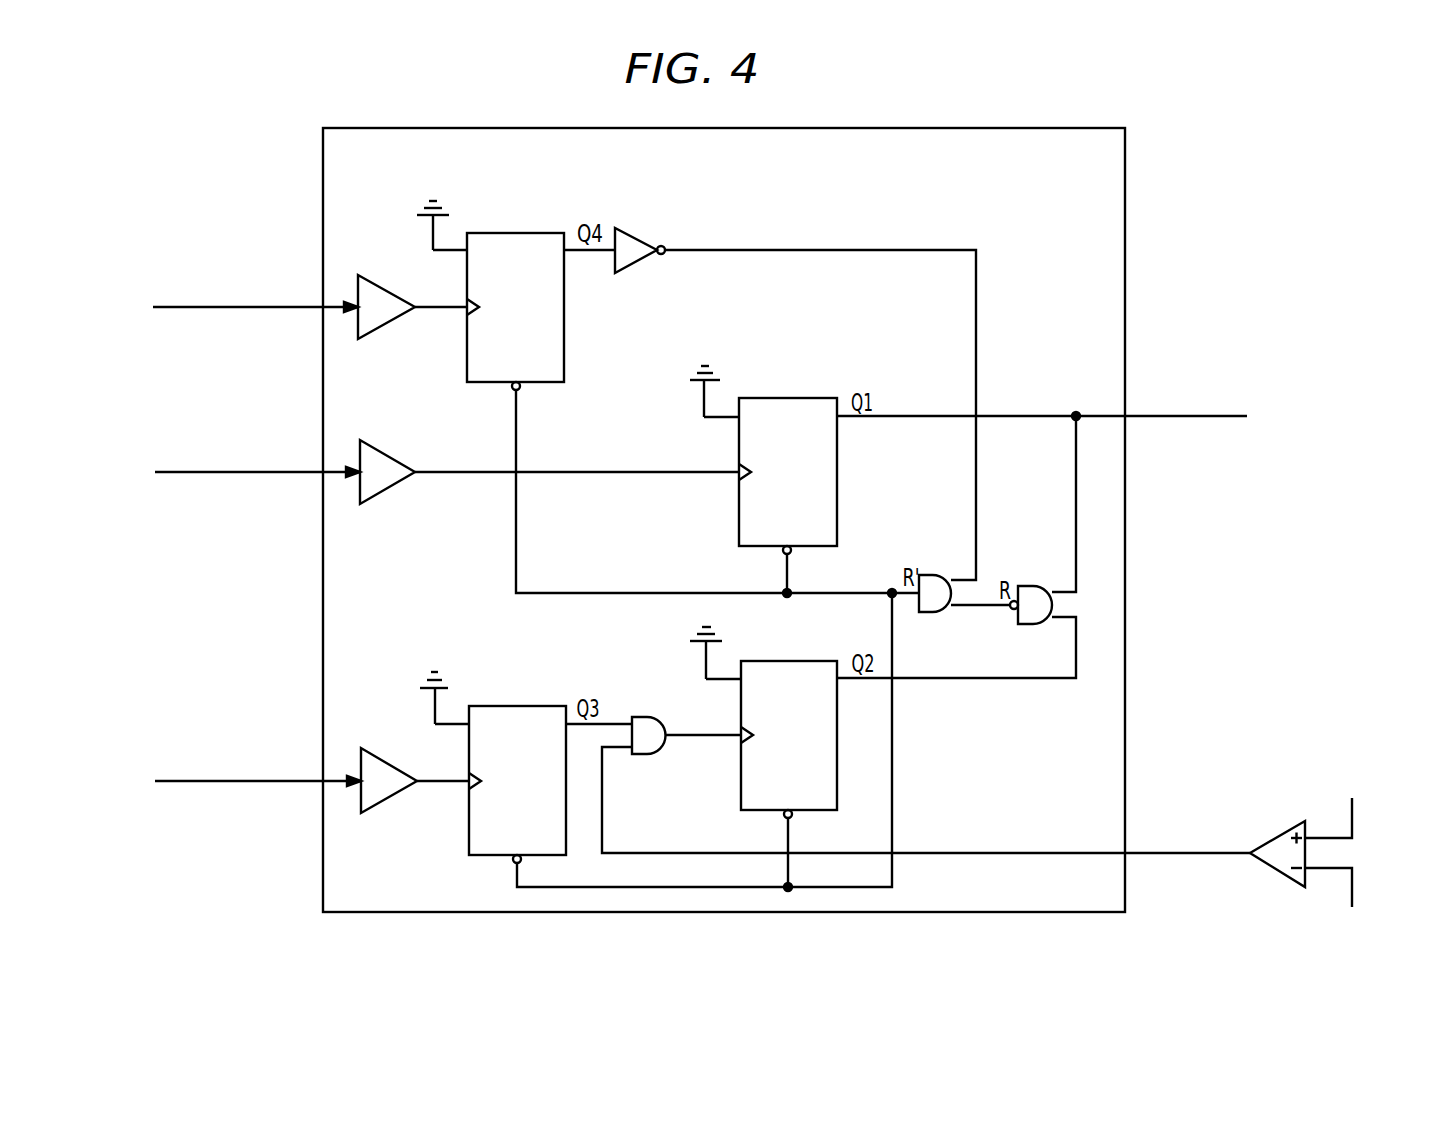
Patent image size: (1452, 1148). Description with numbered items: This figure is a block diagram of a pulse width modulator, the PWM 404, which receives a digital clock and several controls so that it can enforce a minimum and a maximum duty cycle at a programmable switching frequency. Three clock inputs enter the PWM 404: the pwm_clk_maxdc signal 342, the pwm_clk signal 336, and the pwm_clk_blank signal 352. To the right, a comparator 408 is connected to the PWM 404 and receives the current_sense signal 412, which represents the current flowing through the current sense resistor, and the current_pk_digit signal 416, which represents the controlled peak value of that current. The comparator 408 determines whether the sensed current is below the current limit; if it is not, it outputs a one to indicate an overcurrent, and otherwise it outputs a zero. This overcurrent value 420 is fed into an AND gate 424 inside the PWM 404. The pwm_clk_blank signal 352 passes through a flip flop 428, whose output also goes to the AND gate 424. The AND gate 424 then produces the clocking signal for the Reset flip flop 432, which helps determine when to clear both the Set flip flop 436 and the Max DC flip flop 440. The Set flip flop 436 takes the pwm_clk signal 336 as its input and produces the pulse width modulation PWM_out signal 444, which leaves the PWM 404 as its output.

The PWM 404 is at (321, 146).
The Max DC flip flop 440 is at (515, 231).
The Set flip flop 436 is at (788, 396).
The Reset flip flop 432 is at (788, 659).
The flip flop 428 is at (517, 704).
The AND gate 424 is at (643, 713).
The pwm_clk_maxdc signal 342 is at (237, 311).
The pwm_clk signal 336 is at (241, 477).
The pwm_clk_blank signal 352 is at (245, 785).
The PWM_out signal 444 is at (1188, 420).
The comparator 408 is at (1283, 828).
The current_sense signal 412 is at (1353, 818).
The current_pk_digit signal 416 is at (1353, 892).
The overcurrent value 420 is at (1188, 857).